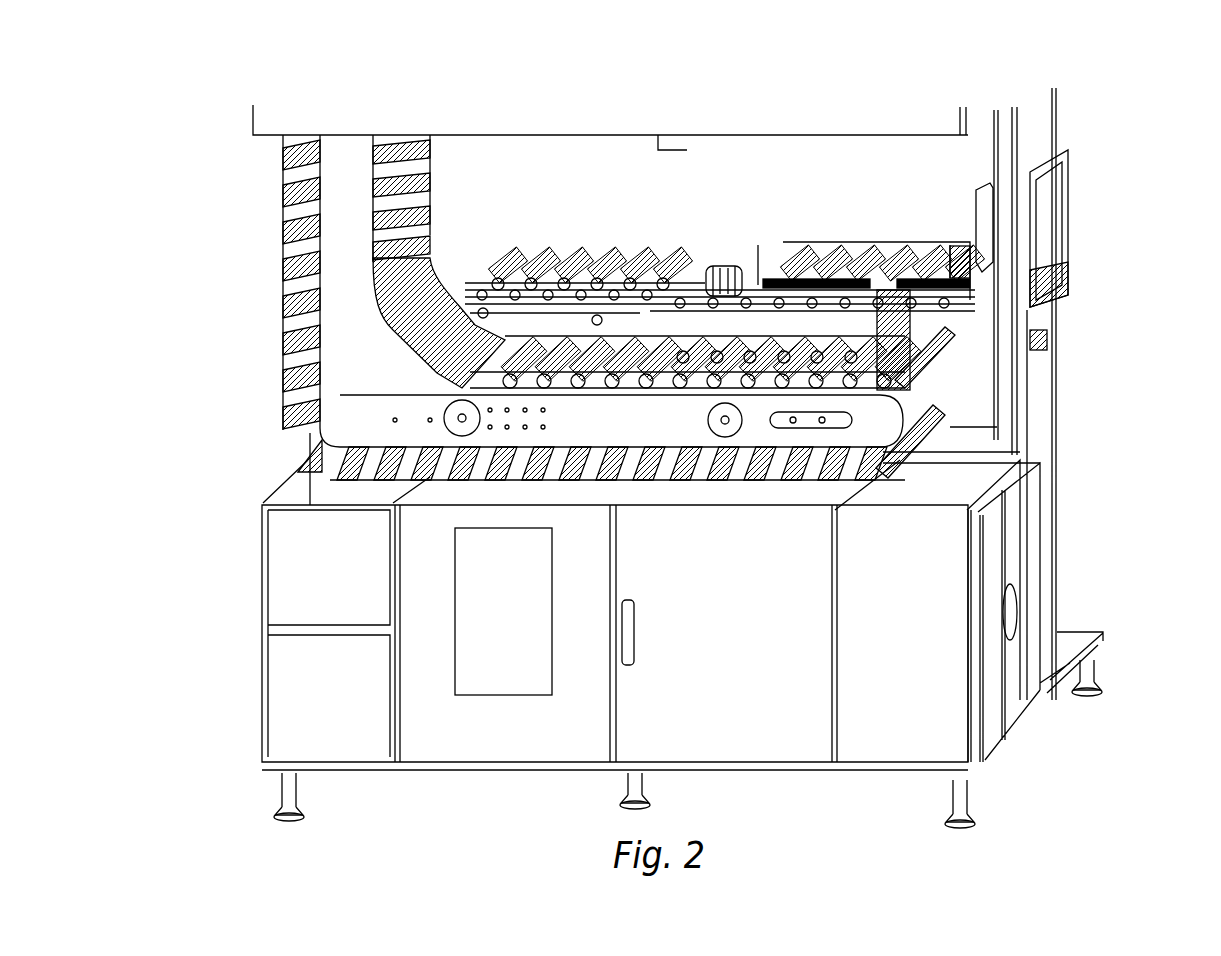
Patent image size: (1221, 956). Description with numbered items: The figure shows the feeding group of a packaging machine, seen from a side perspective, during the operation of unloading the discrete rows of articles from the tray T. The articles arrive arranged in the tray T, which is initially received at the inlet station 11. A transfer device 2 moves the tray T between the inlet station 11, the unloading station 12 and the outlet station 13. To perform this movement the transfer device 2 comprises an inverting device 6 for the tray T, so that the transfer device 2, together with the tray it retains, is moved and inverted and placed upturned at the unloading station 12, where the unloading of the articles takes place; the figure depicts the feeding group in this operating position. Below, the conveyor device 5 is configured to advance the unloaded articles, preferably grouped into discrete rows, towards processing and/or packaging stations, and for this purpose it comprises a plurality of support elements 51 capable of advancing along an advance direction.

The inlet station 11 is at (576, 208).
The transfer device 2 is at (729, 250).
The inverting device 6 is at (753, 276).
The outlet station 13 is at (914, 216).
The tray T is at (937, 247).
The conveyor device 5 is at (470, 366).
The unloading station 12 is at (907, 373).
The support elements 51 is at (673, 397).